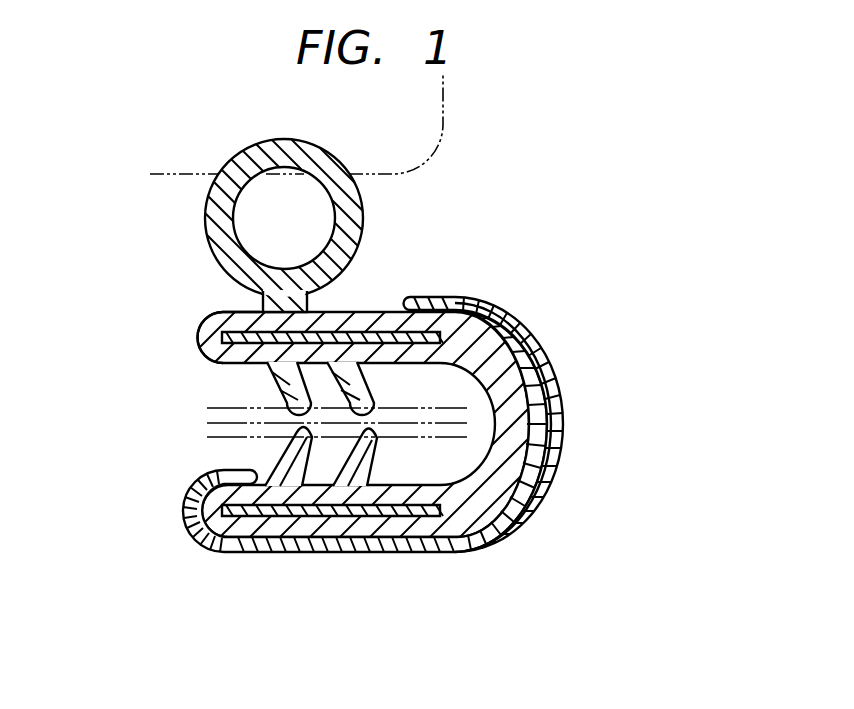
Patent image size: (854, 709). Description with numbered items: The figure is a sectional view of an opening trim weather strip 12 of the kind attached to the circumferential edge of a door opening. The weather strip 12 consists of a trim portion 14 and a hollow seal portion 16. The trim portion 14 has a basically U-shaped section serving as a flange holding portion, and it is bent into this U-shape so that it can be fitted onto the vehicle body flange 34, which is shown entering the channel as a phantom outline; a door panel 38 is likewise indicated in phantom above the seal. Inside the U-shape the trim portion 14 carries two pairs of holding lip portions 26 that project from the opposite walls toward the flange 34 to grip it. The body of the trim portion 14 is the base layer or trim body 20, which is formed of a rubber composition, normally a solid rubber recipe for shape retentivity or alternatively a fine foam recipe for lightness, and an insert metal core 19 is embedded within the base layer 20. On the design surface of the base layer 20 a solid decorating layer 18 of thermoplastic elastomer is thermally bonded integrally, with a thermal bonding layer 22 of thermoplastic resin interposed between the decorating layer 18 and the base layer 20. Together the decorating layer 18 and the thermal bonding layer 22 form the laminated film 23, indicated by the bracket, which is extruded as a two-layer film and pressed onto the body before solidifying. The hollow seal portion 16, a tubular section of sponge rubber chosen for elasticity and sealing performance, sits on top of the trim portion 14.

The weather strip 12 is at (418, 394).
The trim portion 14 is at (343, 558).
The hollow seal portion 16 is at (367, 233).
The decorating layer 18 is at (512, 326).
The insert metal core 19 is at (240, 512).
The trim body (base layer) 20 is at (221, 312).
The thermal bonding layer 22 is at (557, 398).
The laminated film 23 is at (439, 422).
The holding lip portions 26 is at (280, 389).
The vehicle body flange 34 is at (205, 423).
The door panel 38 is at (443, 103).